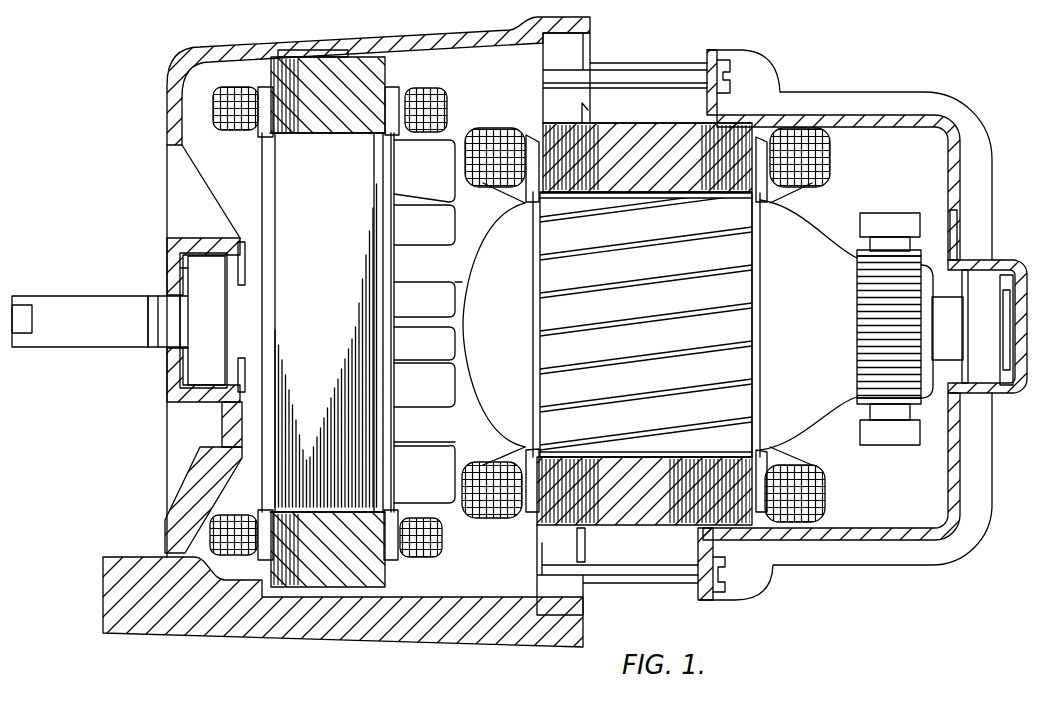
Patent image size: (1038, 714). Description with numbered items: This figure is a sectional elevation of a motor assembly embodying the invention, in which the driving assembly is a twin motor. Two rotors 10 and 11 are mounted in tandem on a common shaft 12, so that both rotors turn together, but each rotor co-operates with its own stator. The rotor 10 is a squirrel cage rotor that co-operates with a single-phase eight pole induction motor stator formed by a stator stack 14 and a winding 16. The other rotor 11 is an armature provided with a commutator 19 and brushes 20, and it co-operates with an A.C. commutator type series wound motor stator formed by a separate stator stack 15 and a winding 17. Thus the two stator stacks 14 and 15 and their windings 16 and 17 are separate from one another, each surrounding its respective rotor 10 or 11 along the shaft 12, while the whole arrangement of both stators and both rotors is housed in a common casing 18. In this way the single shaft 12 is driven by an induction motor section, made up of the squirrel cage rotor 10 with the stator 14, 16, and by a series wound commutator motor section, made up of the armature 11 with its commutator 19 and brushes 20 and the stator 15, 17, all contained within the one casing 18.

The rotor 10 is at (317, 195).
The rotor 11 is at (710, 258).
The common shaft 12 is at (90, 320).
The stator stack 14 is at (335, 568).
The stator stack 15 is at (655, 488).
The winding 16 is at (425, 540).
The winding 17 is at (805, 493).
The common casing 18 is at (425, 40).
The commutator 19 is at (882, 295).
The brushes 20 is at (888, 227).